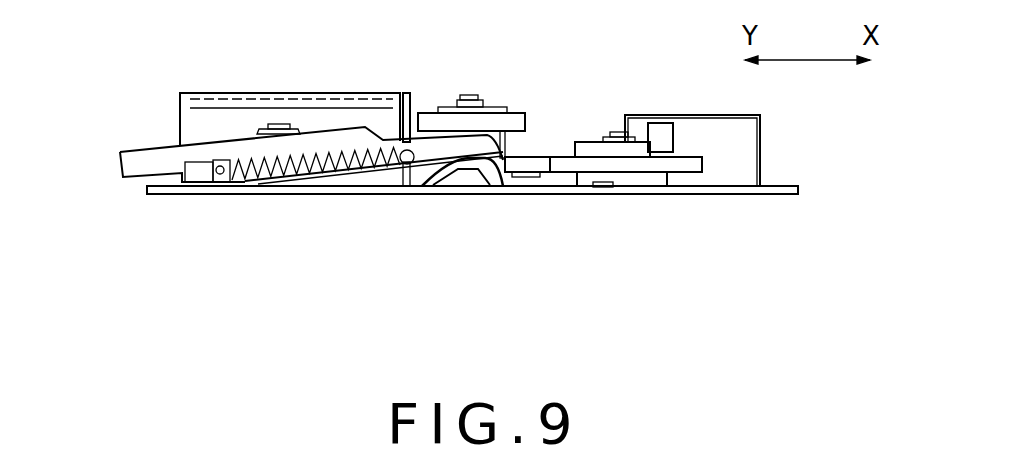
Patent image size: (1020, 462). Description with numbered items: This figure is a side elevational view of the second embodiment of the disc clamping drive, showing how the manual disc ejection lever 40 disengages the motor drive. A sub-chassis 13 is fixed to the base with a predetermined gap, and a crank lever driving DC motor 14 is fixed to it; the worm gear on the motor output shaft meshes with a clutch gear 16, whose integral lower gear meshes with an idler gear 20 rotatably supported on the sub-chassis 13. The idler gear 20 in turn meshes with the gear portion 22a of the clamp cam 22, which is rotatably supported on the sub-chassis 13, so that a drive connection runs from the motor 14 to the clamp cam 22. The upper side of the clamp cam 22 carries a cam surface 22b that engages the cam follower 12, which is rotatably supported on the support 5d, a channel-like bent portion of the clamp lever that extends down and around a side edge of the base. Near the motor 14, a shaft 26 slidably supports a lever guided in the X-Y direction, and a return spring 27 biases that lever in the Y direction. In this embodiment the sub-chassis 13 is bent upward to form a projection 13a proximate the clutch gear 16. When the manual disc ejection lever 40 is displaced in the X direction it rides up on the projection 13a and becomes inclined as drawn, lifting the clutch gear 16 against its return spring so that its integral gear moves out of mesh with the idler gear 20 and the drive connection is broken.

The support 5d is at (752, 115).
The cam follower 12 is at (660, 133).
The sub-chassis 13 is at (730, 194).
The projection 13a is at (432, 194).
The crank lever driving DC motor 14 is at (365, 103).
The clutch gear 16 is at (518, 113).
The idler gear 20 is at (533, 157).
The clamp cam 22 is at (595, 178).
The gear portion 22a is at (702, 166).
The cam surface 22b is at (593, 142).
The shaft 26 is at (280, 124).
The return spring 27 is at (313, 173).
The manual disc ejection lever 40 is at (143, 170).